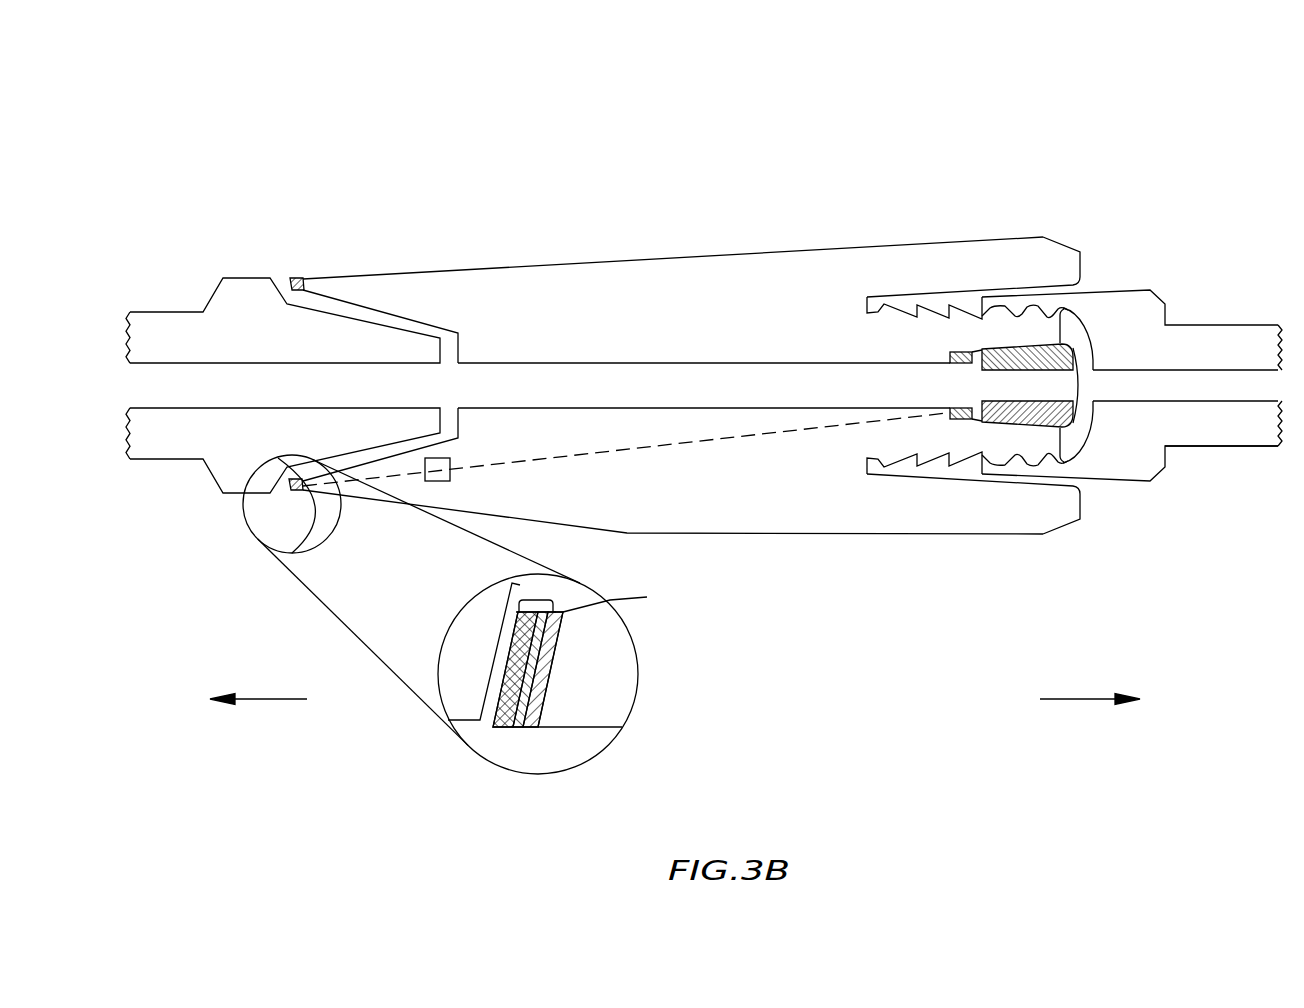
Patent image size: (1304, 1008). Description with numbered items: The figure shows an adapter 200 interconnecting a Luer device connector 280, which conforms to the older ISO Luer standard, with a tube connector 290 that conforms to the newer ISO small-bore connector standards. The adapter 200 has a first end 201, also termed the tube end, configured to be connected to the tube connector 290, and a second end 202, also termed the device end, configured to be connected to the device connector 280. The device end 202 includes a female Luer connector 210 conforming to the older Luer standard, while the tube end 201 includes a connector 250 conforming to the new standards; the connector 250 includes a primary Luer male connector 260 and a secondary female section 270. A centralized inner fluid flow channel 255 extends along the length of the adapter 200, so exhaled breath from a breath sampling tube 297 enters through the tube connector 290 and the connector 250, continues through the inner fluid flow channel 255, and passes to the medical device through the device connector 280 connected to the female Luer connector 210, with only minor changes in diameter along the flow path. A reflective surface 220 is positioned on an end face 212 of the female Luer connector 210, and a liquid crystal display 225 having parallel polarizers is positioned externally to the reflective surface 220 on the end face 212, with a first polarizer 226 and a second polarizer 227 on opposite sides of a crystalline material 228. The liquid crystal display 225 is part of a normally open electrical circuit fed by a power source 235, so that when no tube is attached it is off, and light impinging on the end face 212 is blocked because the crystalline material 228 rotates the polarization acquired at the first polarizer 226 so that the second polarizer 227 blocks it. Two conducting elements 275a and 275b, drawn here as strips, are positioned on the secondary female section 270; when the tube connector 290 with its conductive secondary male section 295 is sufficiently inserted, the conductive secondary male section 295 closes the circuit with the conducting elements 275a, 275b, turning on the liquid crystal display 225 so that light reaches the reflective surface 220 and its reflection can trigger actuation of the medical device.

The adapter 200 is at (686, 72).
The first end 201 is at (1085, 698).
The second end 202 is at (267, 698).
The female Luer connector 210 is at (388, 197).
The end face 212 is at (283, 568).
The reflective surface 220 is at (298, 278).
The liquid crystal display (LCD) 225 is at (289, 283).
The first polarizer 226 is at (502, 727).
The second polarizer 227 is at (523, 728).
The crystalline material 228 is at (512, 727).
The power source 235 is at (437, 455).
The connector 250 is at (977, 202).
The inner fluid flow channel 255 is at (584, 387).
The primary Luer male connector 260 is at (1037, 456).
The secondary female section 270 is at (977, 421).
The conducting element 275a is at (957, 420).
The conducting element 275b is at (948, 356).
The device connector 280 is at (165, 283).
The tube connector 290 is at (1211, 286).
The conductive secondary male section 295 is at (993, 355).
The breath sampling tube 297 is at (1213, 446).